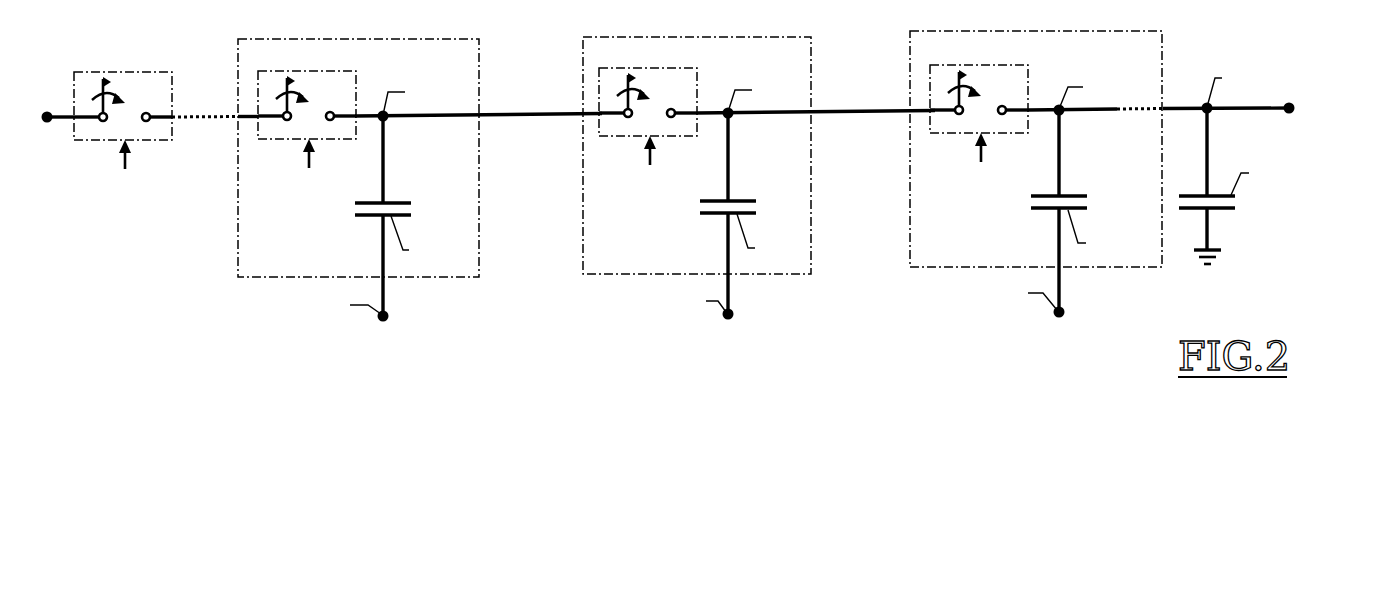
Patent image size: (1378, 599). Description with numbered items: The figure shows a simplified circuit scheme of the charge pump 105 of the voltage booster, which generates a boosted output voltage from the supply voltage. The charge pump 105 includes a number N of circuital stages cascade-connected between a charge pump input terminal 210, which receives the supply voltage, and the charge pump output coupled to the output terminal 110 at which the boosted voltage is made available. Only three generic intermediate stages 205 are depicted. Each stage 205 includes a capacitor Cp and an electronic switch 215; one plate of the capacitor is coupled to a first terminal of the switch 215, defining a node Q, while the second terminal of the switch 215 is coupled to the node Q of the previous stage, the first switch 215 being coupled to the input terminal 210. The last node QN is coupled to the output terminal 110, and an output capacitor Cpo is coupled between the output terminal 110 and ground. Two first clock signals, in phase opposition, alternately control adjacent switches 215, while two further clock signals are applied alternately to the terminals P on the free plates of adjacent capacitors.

The charge pump 105 is at (156, 300).
The output terminal 110 is at (1322, 104).
The charge pump stage 205 is at (724, 191).
The charge pump input terminal 210 is at (82, 170).
The electronic switch 215 is at (551, 118).